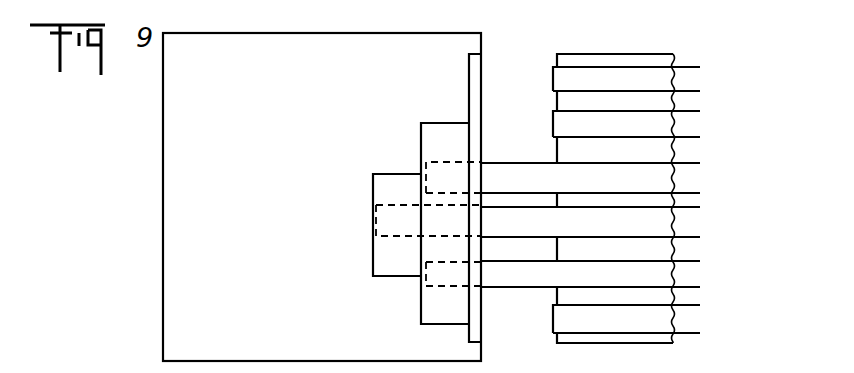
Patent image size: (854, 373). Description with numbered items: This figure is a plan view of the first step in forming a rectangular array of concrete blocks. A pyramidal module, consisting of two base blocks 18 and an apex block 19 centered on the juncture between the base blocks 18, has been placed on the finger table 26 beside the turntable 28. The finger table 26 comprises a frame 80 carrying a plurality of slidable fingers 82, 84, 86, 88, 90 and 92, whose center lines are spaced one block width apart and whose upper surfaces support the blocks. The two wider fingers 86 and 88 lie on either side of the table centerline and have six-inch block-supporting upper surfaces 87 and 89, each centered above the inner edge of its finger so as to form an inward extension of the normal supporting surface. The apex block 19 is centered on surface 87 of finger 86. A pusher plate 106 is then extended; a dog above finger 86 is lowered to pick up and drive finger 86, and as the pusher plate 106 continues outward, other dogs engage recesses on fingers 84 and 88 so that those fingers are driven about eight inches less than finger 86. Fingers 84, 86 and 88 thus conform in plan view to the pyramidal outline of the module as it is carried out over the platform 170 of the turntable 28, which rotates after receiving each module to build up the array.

The turntable 28 is at (147, 131).
The platform 170 is at (173, 220).
The pusher plate 106 is at (473, 72).
The base block 18 is at (437, 130).
The apex block 19 is at (379, 180).
The block-supporting upper surface 89 is at (431, 166).
The block-supporting upper surface 87 is at (387, 220).
The frame 80 is at (621, 343).
The finger 82 is at (626, 319).
The finger 84 is at (522, 281).
The finger 86 is at (522, 233).
The finger 88 is at (522, 188).
The finger 90 is at (628, 135).
The finger 92 is at (632, 88).
The finger table 26 is at (725, 124).